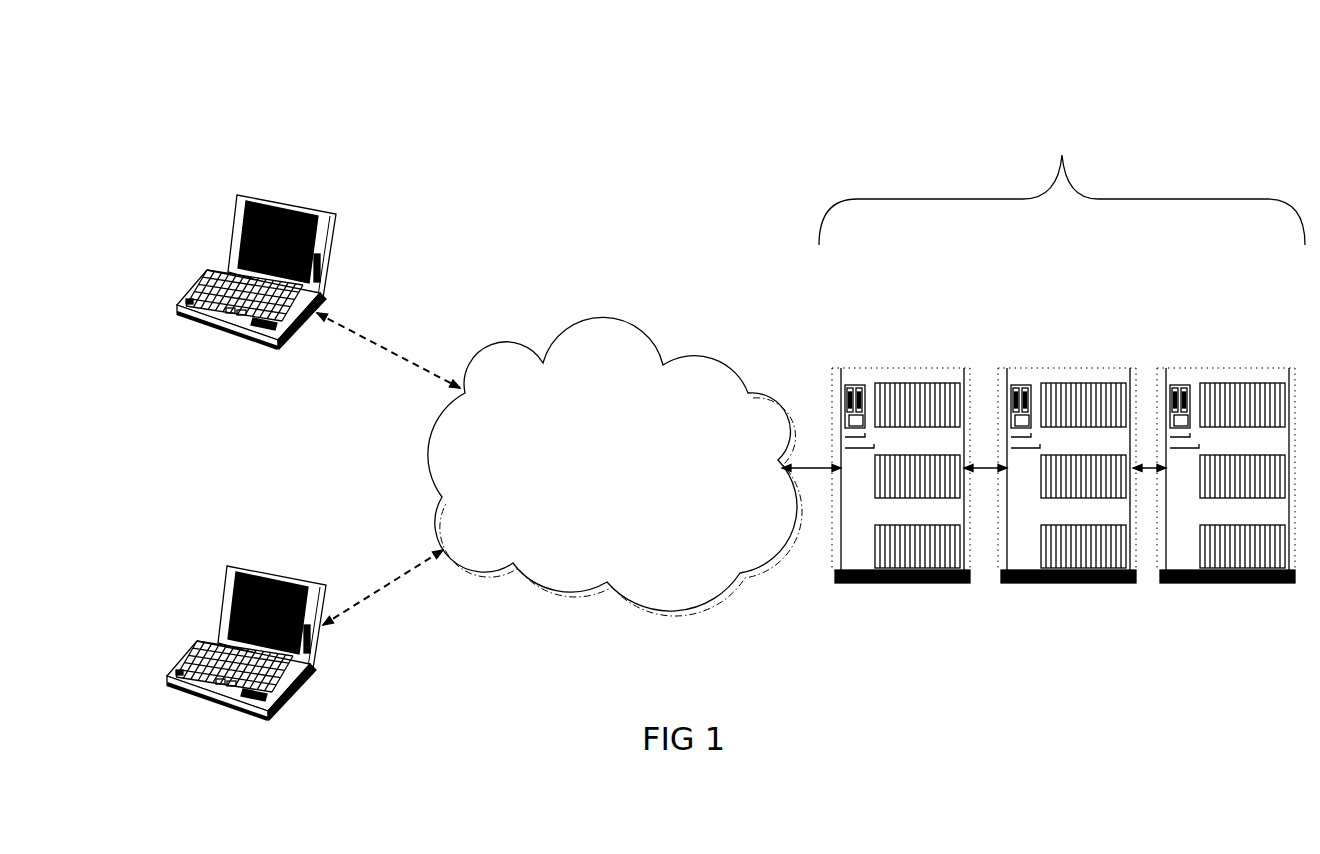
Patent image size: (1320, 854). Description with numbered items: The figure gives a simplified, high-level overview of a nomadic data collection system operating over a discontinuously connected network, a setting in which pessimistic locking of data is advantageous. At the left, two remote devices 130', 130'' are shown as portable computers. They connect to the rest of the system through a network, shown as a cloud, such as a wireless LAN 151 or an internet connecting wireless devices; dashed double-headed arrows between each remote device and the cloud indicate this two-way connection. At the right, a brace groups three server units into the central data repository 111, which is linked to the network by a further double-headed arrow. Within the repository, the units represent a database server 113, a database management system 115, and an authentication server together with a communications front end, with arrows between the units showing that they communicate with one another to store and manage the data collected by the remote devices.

The remote device 130' is at (315, 228).
The remote device 130'' is at (246, 589).
The wireless LAN 151 is at (597, 322).
The central data repository 111 is at (1062, 172).
The database management system 115 is at (1045, 368).
The database server 113 is at (1190, 368).